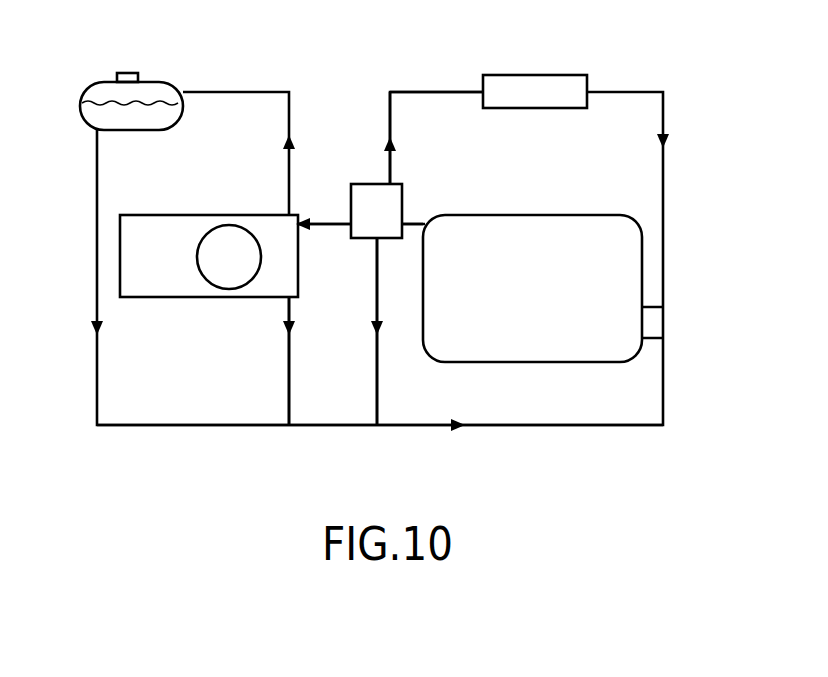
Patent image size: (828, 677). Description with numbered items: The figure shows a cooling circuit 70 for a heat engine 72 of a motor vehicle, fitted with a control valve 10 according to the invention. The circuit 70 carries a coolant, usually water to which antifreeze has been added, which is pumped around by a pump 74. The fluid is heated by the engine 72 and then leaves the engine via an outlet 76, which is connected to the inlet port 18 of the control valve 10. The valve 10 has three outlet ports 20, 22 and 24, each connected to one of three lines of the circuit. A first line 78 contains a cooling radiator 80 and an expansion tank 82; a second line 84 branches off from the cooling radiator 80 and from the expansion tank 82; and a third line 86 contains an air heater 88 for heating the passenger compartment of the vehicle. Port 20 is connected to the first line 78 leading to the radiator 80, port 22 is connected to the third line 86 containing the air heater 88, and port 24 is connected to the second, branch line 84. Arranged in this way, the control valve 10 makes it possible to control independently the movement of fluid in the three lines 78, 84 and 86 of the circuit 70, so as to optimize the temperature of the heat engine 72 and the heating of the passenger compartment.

The control valve 10 is at (389, 226).
The inlet port 18 is at (404, 222).
The outlet port 20 is at (330, 222).
The outlet port 22 is at (390, 182).
The outlet port 24 is at (377, 242).
The circuit 70 is at (247, 436).
The heat engine 72 is at (544, 303).
The pump 74 is at (660, 325).
The outlet 76 is at (424, 222).
The first line 78 is at (287, 383).
The cooling radiator 80 is at (178, 272).
The expansion tank 82 is at (168, 82).
The second line 84 is at (376, 358).
The third line 86 is at (433, 90).
The air heater 88 is at (560, 75).